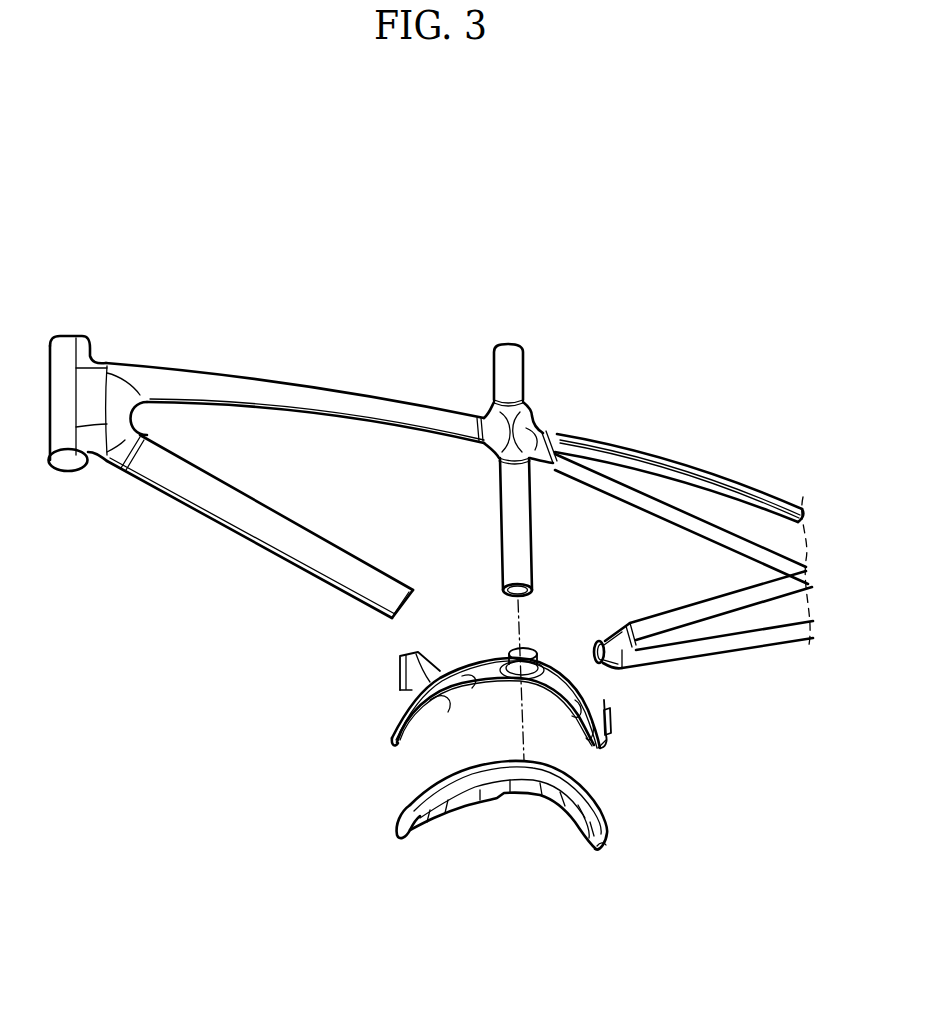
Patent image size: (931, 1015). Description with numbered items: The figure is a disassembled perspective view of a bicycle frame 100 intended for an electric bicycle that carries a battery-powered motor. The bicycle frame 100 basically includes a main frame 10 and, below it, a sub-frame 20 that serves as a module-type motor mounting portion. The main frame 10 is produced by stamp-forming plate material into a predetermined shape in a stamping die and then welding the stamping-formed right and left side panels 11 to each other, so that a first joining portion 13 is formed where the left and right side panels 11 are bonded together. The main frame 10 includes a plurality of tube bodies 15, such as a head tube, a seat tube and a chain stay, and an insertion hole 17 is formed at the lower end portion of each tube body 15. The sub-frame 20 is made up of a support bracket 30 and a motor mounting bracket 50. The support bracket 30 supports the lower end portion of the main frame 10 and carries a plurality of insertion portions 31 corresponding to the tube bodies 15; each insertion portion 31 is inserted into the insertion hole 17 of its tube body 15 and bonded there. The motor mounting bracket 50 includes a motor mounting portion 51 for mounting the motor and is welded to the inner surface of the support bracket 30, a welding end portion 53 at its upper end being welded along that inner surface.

The bicycle frame 100 is at (452, 263).
The main frame 10 is at (604, 364).
The side panels 11 is at (227, 513).
The first joining portion 13 is at (174, 502).
The tube bodies 15 is at (259, 559).
The insertion hole 17 is at (395, 632).
The sub-frame 20 is at (303, 716).
The support bracket 30 is at (375, 723).
The insertion portions 31 is at (427, 663).
The motor mounting bracket 50 is at (385, 816).
The motor mounting portion 51 is at (487, 776).
The welding end portion 53 is at (553, 774).